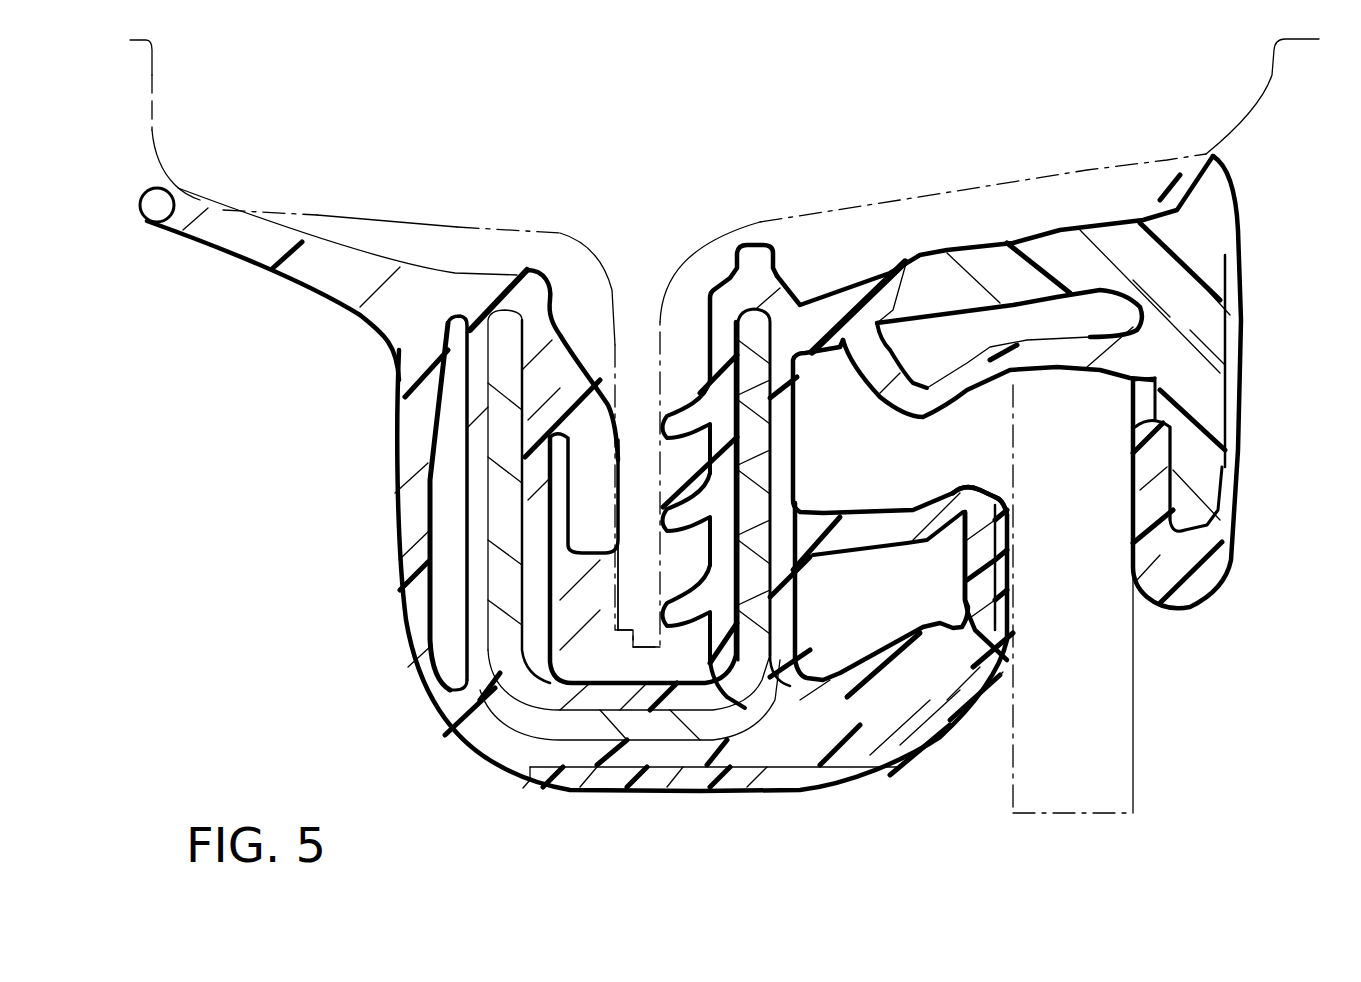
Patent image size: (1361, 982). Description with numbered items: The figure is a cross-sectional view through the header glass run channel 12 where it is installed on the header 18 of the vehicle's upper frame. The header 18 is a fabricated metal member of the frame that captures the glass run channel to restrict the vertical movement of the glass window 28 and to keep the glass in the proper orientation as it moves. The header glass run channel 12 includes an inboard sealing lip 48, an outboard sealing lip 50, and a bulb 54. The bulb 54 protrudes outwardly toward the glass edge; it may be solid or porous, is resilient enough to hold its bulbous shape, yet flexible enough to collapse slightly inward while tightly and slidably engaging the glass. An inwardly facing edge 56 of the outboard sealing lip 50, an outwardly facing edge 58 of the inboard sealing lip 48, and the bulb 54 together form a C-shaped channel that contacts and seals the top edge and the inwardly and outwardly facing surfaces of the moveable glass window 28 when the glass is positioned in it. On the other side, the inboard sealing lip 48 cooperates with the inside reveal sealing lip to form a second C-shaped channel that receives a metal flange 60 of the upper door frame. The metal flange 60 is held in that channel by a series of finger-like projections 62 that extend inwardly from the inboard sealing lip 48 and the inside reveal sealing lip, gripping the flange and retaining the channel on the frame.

The header glass run channel 12 is at (843, 782).
The header 18 is at (555, 235).
The glass window 28 is at (1100, 777).
The inboard sealing lip 48 is at (960, 640).
The outboard sealing lip 50 is at (1153, 462).
The bulb 54 is at (1072, 345).
The inwardly facing edge 56 is at (1157, 380).
The outwardly facing edge 58 is at (1015, 543).
The metal flange 60 is at (647, 632).
The finger-like projections 62 is at (605, 507).